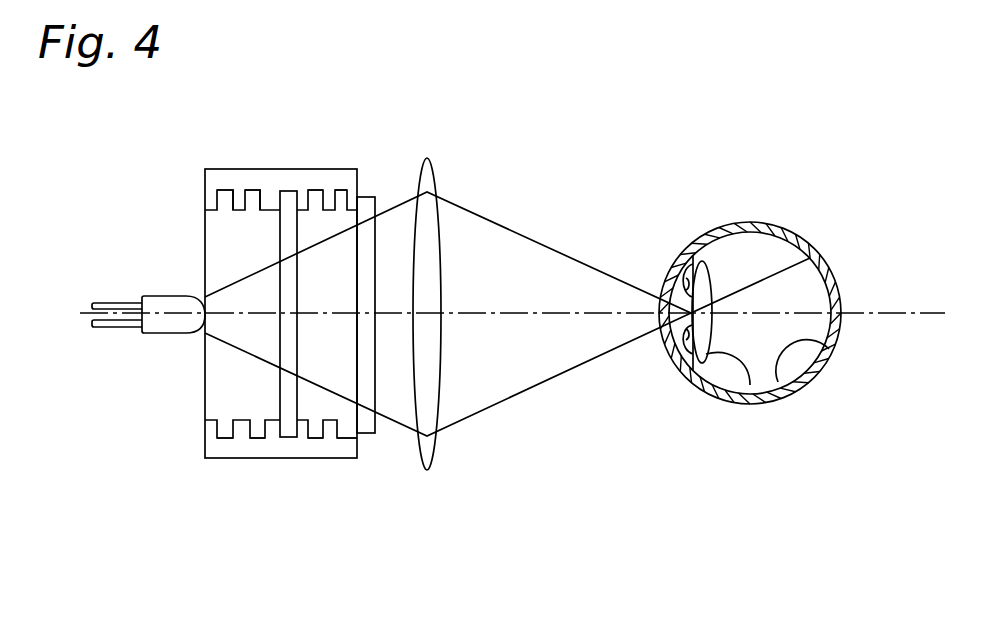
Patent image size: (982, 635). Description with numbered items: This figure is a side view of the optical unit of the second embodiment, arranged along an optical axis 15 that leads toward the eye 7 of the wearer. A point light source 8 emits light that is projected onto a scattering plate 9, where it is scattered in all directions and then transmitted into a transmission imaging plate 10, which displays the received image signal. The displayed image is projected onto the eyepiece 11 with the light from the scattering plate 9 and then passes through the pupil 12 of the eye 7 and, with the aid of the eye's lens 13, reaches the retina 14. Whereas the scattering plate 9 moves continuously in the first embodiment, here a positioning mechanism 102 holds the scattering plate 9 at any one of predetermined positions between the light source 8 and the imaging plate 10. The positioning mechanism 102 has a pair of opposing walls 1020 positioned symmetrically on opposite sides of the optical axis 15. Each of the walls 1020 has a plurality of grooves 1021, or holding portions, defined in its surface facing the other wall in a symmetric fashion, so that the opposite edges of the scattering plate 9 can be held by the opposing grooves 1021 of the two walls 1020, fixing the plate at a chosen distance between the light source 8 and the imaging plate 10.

The eye 7 is at (787, 234).
The point light source 8 is at (178, 297).
The scattering plate 9 is at (281, 219).
The transmission imaging plate 10 is at (366, 196).
The eyepiece 11 is at (433, 163).
The pupil 12 is at (676, 287).
The lens 13 is at (750, 385).
The retina 14 is at (691, 313).
The optical axis 15 is at (857, 312).
The positioning mechanism 102 is at (277, 460).
The opposing walls 1020 is at (220, 177).
The grooves 1021 is at (318, 190).